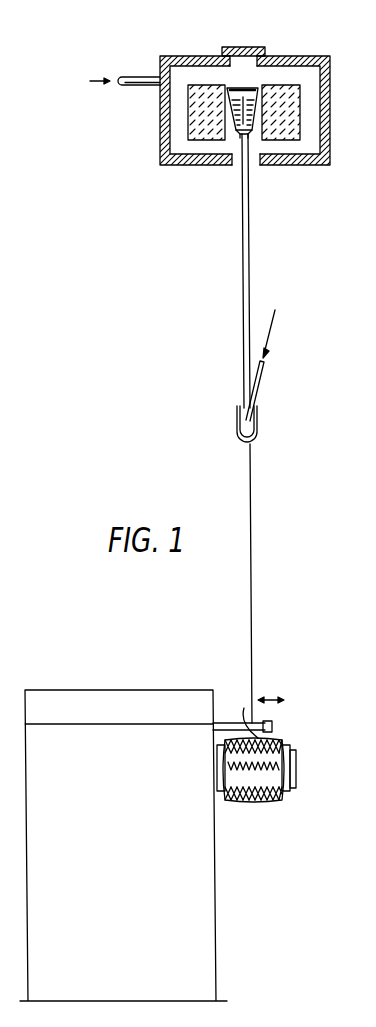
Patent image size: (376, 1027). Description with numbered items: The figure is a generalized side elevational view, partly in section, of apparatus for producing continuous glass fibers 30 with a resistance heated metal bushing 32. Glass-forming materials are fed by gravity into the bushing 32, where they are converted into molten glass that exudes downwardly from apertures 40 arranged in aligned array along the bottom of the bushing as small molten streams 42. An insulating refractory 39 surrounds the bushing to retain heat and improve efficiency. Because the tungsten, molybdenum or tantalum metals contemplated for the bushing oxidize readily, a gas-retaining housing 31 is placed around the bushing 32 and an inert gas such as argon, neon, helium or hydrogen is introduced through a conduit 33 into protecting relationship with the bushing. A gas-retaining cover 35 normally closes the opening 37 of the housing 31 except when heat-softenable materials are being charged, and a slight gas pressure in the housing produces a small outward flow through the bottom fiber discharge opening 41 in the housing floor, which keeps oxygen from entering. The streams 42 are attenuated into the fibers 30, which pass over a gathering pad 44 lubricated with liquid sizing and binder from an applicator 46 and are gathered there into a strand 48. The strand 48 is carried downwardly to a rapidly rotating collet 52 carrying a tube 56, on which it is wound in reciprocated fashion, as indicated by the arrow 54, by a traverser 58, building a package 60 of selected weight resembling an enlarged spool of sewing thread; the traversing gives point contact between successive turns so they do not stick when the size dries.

The continuous glass fibers 30 is at (249, 212).
The gas-retaining housing 31 is at (160, 110).
The bushing 32 is at (258, 88).
The conduit 33 is at (137, 77).
The gas-retaining cover 35 is at (237, 48).
The opening 37 is at (236, 57).
The insulating refractory 39 is at (300, 134).
The apertures 40 is at (236, 136).
The outlet opening 41 is at (234, 160).
The molten streams 42 is at (254, 137).
The gathering pad 44 is at (258, 425).
The applicator 46 is at (257, 387).
The strand 48 is at (251, 505).
The collet 52 is at (292, 758).
The arrow 54 is at (275, 700).
The tube 56 is at (289, 792).
The traverser 58 is at (243, 707).
The package 60 is at (240, 803).